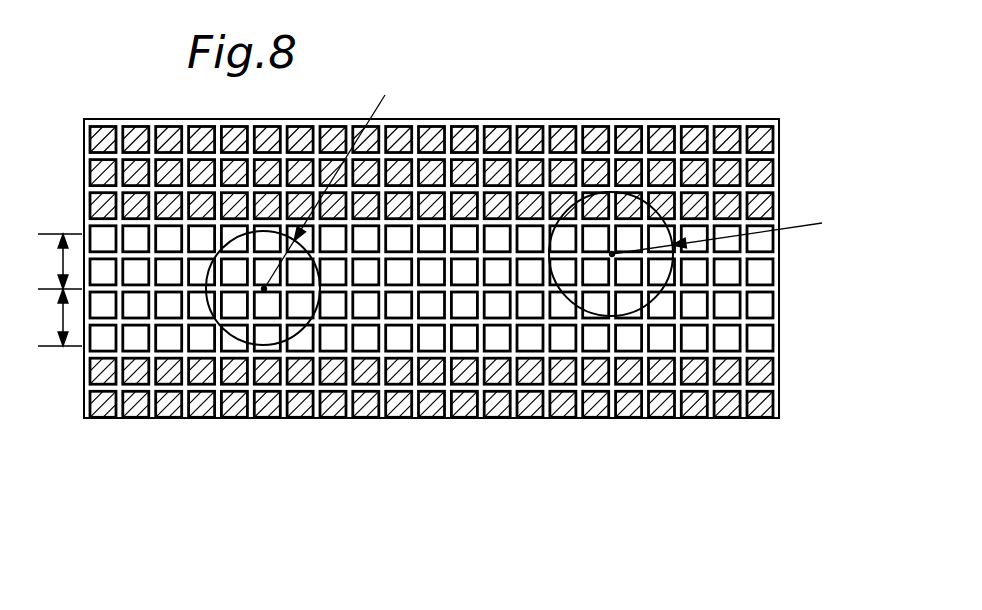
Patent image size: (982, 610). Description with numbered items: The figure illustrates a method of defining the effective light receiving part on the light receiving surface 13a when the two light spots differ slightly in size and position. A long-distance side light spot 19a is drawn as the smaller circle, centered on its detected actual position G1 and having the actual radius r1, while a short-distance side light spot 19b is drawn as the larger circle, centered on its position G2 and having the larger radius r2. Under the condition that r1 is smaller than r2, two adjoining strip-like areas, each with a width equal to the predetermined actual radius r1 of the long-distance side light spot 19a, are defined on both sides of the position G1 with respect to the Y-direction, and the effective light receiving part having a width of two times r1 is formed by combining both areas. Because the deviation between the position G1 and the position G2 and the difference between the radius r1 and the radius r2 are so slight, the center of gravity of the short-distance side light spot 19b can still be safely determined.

The pixel array / display region 13a is at (622, 121).
The long-distance side light spot 19a is at (230, 335).
The short-distance side light spot 19b is at (568, 299).
The actual position of the long-distance side light spot G1 is at (265, 291).
The actual position of the short-distance side light spot G2 is at (613, 257).
The actual radius of the long-distance side light spot r1 is at (215, 208).
The actual radius of the short-distance side light spot r2 is at (732, 231).